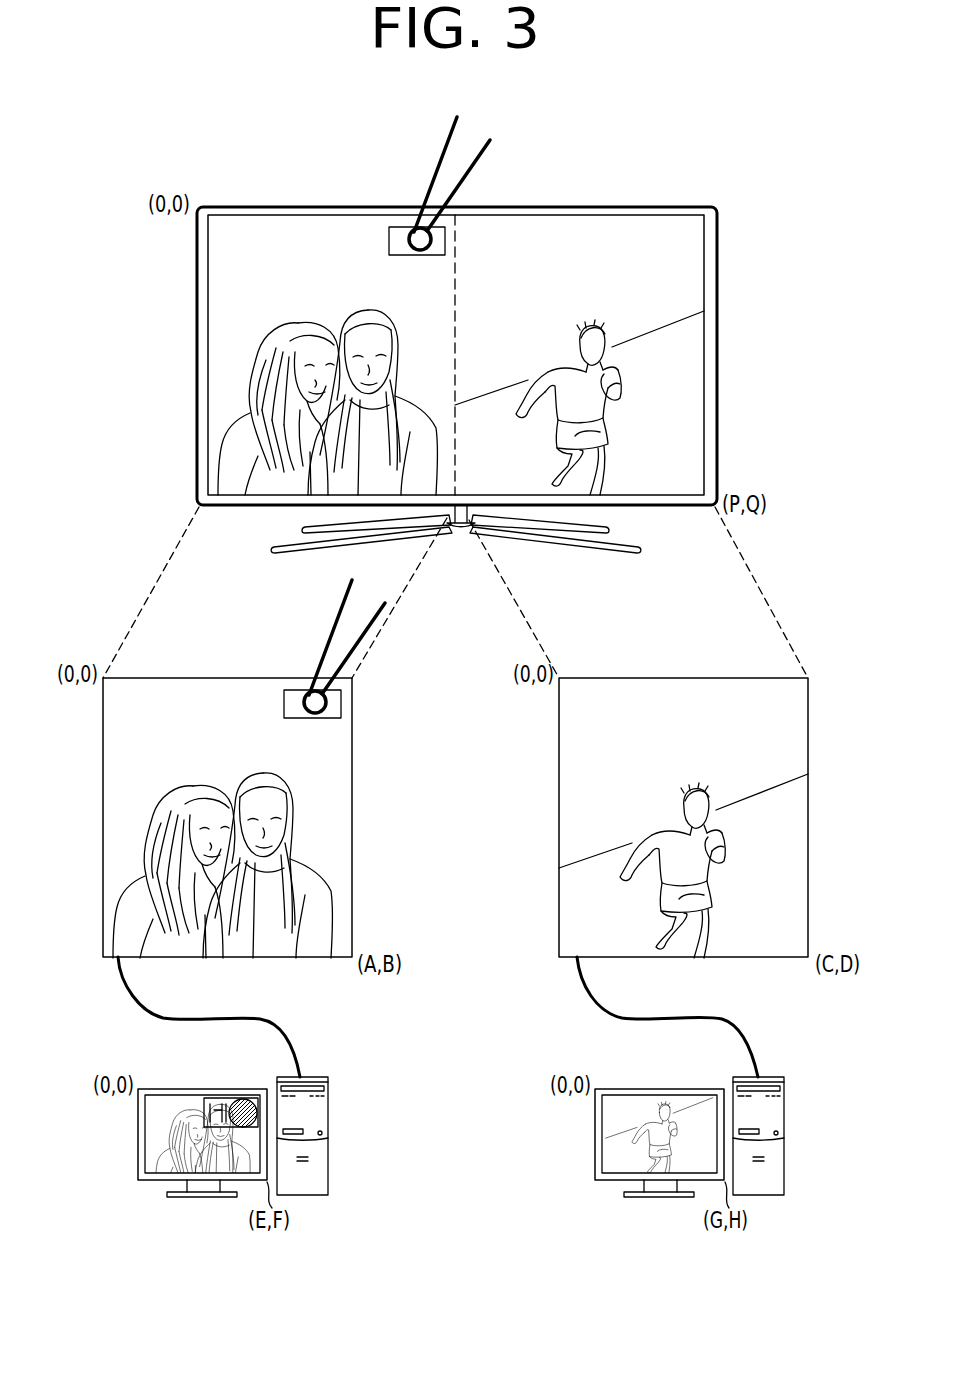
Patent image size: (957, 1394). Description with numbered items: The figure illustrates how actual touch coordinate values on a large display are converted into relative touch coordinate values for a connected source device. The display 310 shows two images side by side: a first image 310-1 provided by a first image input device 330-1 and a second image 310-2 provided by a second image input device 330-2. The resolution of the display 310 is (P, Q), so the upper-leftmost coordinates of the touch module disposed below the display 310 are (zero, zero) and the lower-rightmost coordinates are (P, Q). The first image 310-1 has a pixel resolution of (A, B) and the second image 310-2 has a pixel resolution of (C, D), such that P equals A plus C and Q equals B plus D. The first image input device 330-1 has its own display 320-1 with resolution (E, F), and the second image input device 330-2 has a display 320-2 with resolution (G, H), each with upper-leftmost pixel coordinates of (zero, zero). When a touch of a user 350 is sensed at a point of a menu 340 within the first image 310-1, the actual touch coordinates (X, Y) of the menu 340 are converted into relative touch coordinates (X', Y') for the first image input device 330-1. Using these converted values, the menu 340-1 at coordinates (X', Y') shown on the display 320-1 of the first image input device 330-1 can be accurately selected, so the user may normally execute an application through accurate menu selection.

The display 310 is at (690, 205).
The first image 310-1 is at (242, 228).
The second image 310-2 is at (633, 228).
The menu 340 is at (397, 228).
The user 350 is at (452, 147).
The display of the first image input device 320-1 is at (163, 1089).
The menu of the coordinates (X', Y') 340-1 is at (243, 1098).
The first image input device 330-1 is at (328, 1153).
The display of the second image input device 320-2 is at (620, 1089).
The second image input device 330-2 is at (785, 1153).